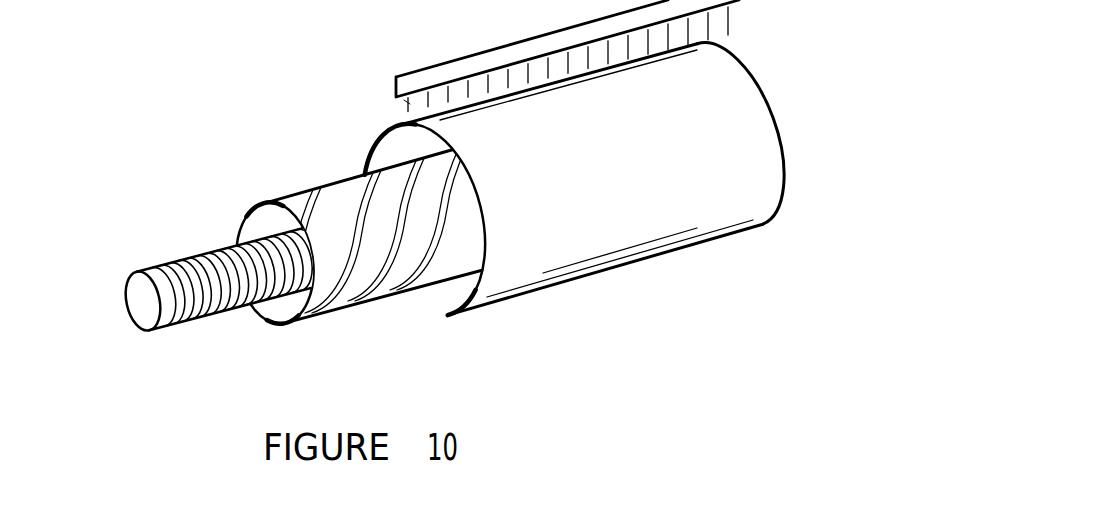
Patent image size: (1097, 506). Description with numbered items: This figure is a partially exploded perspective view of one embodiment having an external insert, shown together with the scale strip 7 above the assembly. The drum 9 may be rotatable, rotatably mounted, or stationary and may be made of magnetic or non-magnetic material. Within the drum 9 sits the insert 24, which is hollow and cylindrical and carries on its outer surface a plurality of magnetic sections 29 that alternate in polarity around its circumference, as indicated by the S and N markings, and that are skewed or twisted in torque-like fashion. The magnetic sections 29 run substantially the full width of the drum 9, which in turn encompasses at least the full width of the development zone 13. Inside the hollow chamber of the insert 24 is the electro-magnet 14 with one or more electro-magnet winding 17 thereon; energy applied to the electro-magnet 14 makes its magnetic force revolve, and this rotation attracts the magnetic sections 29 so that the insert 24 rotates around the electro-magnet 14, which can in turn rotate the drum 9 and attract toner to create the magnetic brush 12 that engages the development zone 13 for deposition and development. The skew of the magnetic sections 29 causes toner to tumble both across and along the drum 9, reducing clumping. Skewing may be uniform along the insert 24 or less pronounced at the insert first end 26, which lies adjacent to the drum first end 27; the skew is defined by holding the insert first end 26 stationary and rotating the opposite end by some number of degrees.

The scale strip 7 is at (563, 31).
The drum 9 is at (574, 198).
The magnetic brush 12 is at (745, 6).
The development zone 13 is at (407, 103).
The electro-magnet 14 is at (142, 300).
The electro-magnet winding 17 is at (194, 283).
The insert 24 is at (345, 233).
The insert first end 26 is at (263, 201).
The drum first end 27 is at (448, 318).
The magnetic section 29 is at (356, 237).